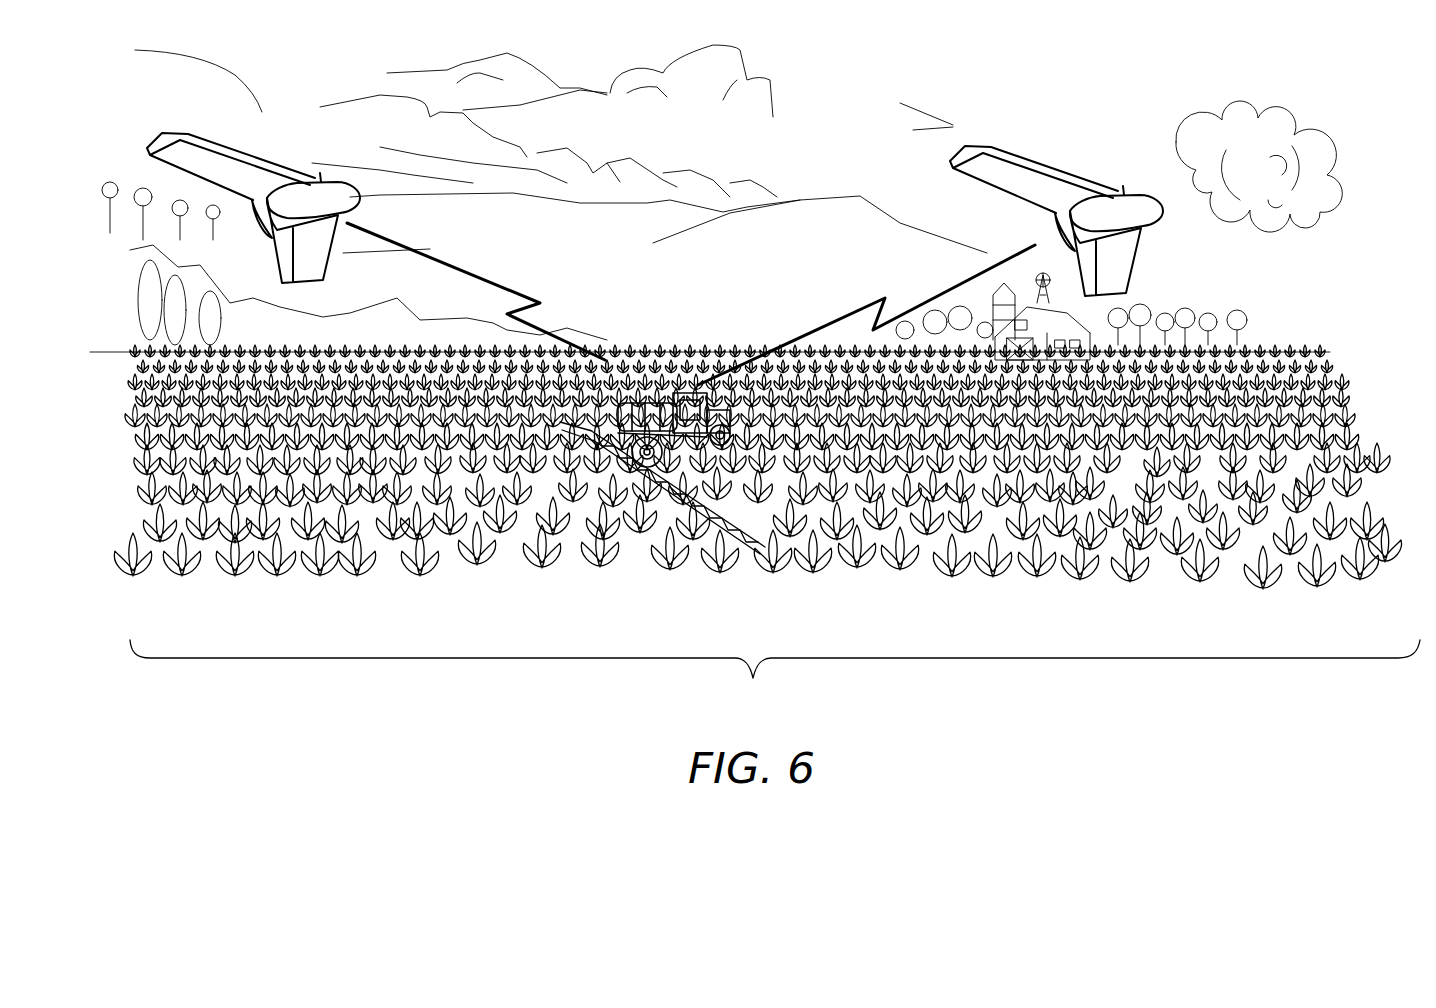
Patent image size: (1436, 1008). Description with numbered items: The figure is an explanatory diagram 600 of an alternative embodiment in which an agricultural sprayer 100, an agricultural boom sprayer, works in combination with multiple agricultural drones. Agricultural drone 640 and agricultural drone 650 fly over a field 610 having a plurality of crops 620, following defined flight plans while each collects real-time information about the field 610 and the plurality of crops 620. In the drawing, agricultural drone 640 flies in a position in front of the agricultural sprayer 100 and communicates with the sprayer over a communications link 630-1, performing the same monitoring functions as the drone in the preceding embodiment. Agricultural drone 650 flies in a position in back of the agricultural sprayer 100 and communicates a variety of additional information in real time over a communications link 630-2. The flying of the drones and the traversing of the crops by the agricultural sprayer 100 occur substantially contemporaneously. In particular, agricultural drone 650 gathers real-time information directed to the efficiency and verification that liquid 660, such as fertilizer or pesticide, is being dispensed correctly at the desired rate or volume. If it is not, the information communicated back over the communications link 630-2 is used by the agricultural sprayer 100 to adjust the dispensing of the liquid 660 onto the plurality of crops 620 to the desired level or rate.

The explanatory diagram 600 is at (771, 173).
The agricultural drone 650 is at (290, 168).
The agricultural drone 640 is at (1093, 173).
The communications link 630-1 is at (857, 302).
The communications link 630-2 is at (497, 288).
The agricultural sprayer 100 is at (660, 435).
The liquid 660 is at (700, 520).
The crops 620 is at (1110, 500).
The field 610 is at (767, 533).